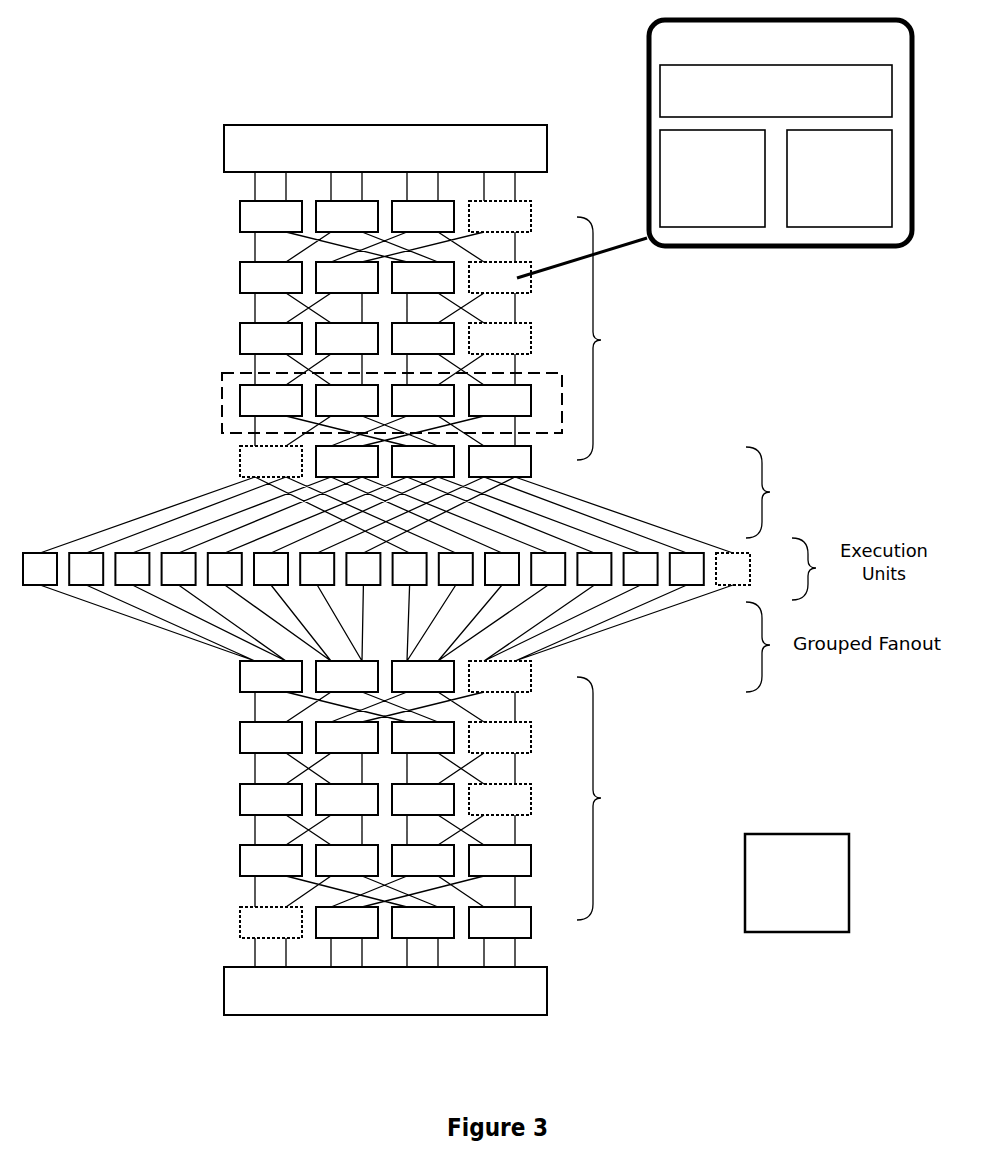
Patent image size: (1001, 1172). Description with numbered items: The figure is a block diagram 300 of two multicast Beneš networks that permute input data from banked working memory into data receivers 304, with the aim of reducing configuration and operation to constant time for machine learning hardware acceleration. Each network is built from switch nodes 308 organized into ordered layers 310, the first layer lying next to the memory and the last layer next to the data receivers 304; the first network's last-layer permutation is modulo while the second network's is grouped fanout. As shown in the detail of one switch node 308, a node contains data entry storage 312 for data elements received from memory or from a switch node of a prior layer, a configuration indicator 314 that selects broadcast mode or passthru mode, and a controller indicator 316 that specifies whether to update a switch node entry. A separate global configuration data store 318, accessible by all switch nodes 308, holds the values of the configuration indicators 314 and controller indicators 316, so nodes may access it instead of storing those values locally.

The block diagram 300 is at (95, 47).
The data receivers 304 is at (135, 506).
The switch node 308 is at (247, 331).
The layer 310 is at (229, 386).
The data entry storage 312 is at (776, 91).
The configuration indicator 314 is at (712, 178).
The controller indicator 316 is at (839, 178).
The global configuration data store 318 is at (797, 883).